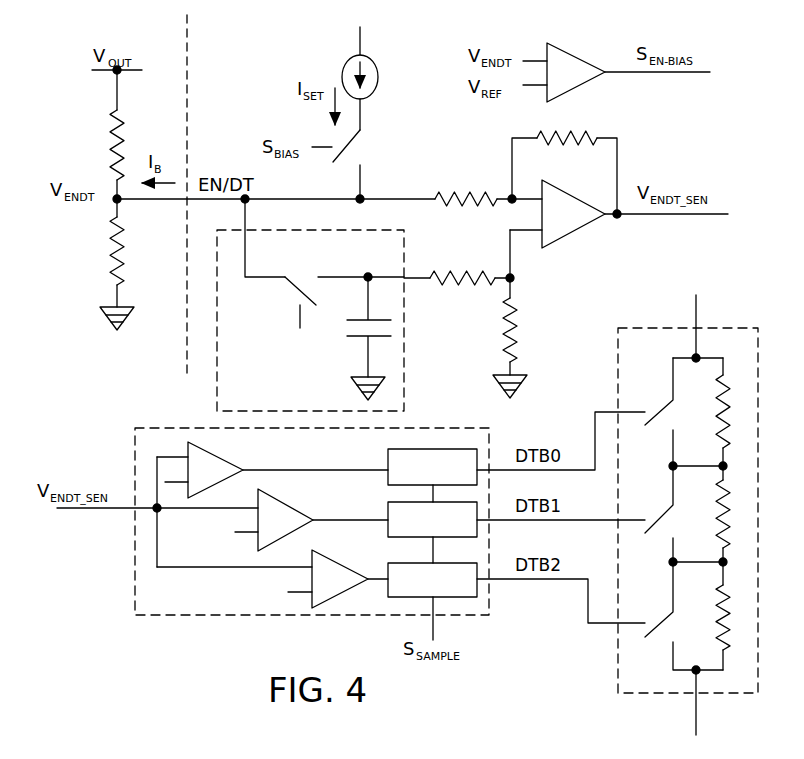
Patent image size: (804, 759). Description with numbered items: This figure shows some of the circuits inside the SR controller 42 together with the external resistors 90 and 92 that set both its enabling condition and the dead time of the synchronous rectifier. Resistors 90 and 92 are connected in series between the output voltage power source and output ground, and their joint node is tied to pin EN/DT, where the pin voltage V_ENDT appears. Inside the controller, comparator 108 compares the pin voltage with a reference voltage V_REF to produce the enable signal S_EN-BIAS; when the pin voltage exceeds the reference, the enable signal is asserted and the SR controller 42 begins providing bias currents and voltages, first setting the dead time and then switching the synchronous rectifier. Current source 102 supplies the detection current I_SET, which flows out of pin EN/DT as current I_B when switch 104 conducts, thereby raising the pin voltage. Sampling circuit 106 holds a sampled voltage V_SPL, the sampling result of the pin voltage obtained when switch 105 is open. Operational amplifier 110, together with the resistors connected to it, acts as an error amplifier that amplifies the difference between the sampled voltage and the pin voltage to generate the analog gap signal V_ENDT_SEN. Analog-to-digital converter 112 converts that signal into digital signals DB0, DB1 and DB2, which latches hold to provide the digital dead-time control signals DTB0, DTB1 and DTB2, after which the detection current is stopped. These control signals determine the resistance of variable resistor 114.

The SR controller 42 is at (187, 30).
The resistor 90 is at (99, 145).
The resistor 92 is at (99, 251).
The current source 102 is at (379, 78).
The switch 104 is at (357, 164).
The switch 105 is at (300, 288).
The sampling circuit 106 is at (310, 305).
The comparator 108 is at (566, 52).
The operational amplifier 110 is at (619, 189).
The analog-to-digital converter 112 is at (175, 610).
The variable resistor 114 is at (655, 354).